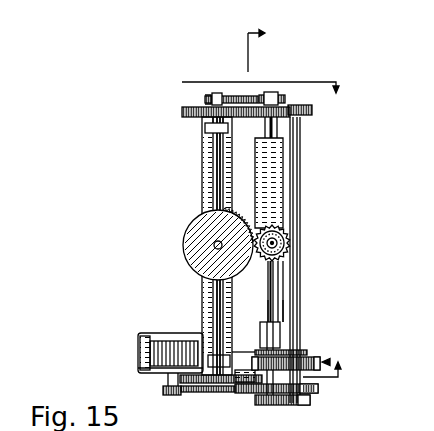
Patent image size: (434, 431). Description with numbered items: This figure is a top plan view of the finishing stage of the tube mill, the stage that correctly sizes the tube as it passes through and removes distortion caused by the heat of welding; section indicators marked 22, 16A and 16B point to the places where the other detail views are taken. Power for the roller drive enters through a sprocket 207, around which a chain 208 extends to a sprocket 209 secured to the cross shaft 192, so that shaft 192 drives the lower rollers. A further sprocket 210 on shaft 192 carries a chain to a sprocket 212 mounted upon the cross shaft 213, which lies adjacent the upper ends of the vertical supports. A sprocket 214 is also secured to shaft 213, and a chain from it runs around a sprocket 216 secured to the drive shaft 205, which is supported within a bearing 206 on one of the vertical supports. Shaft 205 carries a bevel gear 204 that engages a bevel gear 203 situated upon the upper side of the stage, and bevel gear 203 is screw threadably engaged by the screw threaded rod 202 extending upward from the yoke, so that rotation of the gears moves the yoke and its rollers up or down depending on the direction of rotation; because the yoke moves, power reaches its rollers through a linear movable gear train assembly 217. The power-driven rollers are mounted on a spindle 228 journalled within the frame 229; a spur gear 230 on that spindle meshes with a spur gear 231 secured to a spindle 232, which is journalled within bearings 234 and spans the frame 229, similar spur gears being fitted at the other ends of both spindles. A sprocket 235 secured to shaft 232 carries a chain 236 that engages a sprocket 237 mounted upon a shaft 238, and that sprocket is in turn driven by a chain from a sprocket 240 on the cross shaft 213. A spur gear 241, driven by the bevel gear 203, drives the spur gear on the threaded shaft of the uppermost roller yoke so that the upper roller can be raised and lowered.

The section line 22 is at (256, 44).
The section line 16A is at (332, 370).
The section line 16B is at (270, 88).
The cross shaft 192 is at (303, 386).
The screw threaded rod 202 is at (285, 240).
The bevel gear 203 is at (281, 231).
The bevel gear 204 is at (284, 258).
The drive shaft 205 is at (268, 312).
The bearing 206 is at (277, 335).
The sprocket 207 is at (172, 397).
The chain 208 is at (202, 384).
The sprocket 209 is at (250, 393).
The sprocket 210 is at (283, 405).
The sprocket 212 is at (312, 402).
The cross shaft 213 is at (296, 196).
The sprocket 214 is at (298, 352).
The sprocket 216 is at (262, 322).
The linear movable gear train assembly 217 is at (328, 362).
The spindle 228 is at (202, 283).
The frame 229 is at (203, 190).
The spur gear 230 is at (182, 113).
The spur gear 231 is at (203, 120).
The spindle 232 is at (203, 152).
The bearings 234 is at (203, 333).
The sprocket 235 is at (205, 98).
The chain 236 is at (235, 98).
The sprocket 237 is at (277, 95).
The shaft 238 is at (268, 95).
The sprocket 240 is at (312, 110).
The spur gear 241 is at (290, 246).